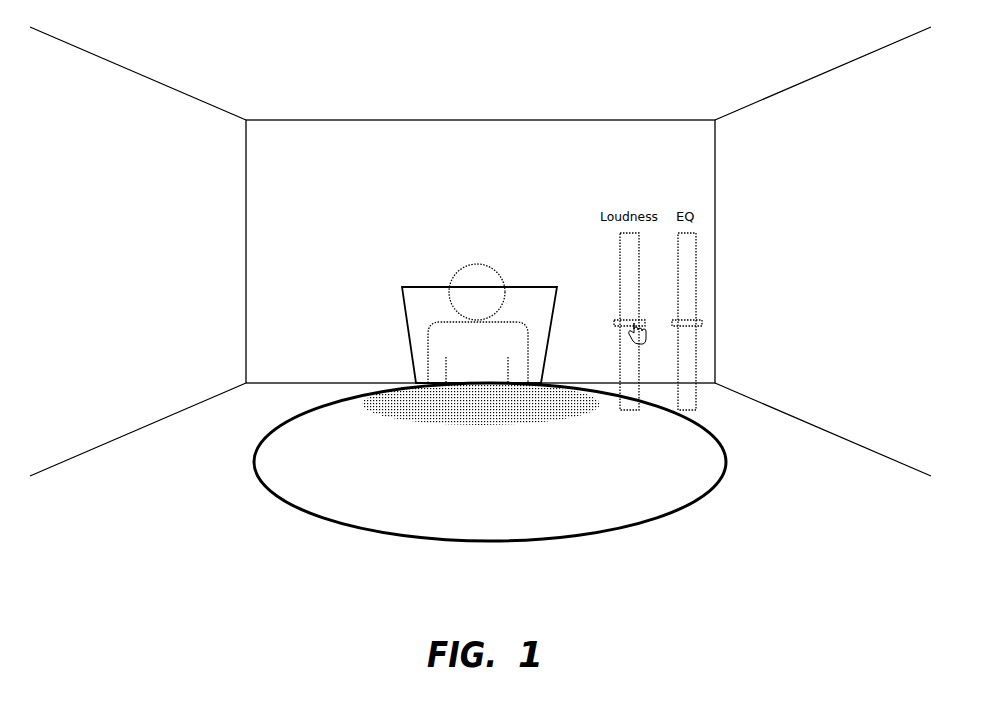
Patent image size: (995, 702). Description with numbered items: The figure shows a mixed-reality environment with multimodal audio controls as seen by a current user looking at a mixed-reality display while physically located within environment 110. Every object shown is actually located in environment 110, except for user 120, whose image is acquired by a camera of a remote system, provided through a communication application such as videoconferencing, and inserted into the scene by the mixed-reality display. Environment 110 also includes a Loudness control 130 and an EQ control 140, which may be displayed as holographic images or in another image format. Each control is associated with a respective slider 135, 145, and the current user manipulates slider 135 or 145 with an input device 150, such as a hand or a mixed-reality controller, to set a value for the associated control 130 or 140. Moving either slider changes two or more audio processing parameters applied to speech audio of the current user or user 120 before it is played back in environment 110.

The environment 110 is at (185, 373).
The user 120 is at (448, 322).
The Loudness control 130 is at (619, 357).
The slider 135 is at (615, 323).
The EQ control 140 is at (677, 357).
The slider 145 is at (673, 323).
The hand / cursor input indicator 150 is at (637, 336).